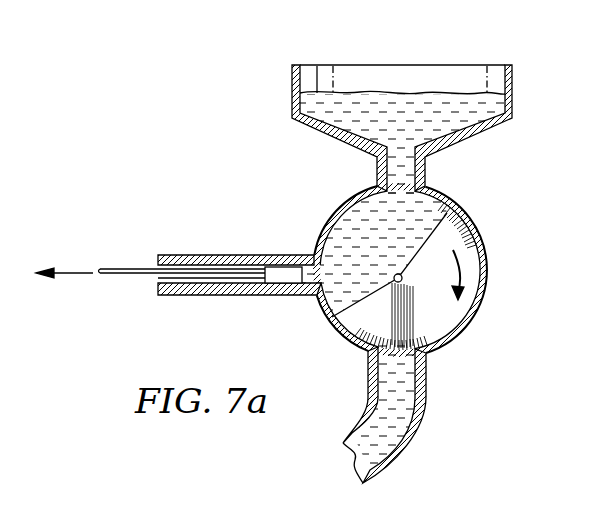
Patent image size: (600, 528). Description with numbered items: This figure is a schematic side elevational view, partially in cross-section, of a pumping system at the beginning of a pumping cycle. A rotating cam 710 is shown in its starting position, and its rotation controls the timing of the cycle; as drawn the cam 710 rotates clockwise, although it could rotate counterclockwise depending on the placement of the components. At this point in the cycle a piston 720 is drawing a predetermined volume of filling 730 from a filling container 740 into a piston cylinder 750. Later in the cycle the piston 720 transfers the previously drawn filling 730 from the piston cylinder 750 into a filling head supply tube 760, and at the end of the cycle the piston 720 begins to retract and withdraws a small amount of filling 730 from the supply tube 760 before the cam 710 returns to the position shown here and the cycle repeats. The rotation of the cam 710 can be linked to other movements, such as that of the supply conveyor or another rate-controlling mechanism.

The rotating cam 710 is at (452, 326).
The piston 720 is at (283, 266).
The filling 730 is at (428, 100).
The filling container 740 is at (352, 64).
The piston cylinder 750 is at (190, 255).
The filling head supply tube 760 is at (420, 422).